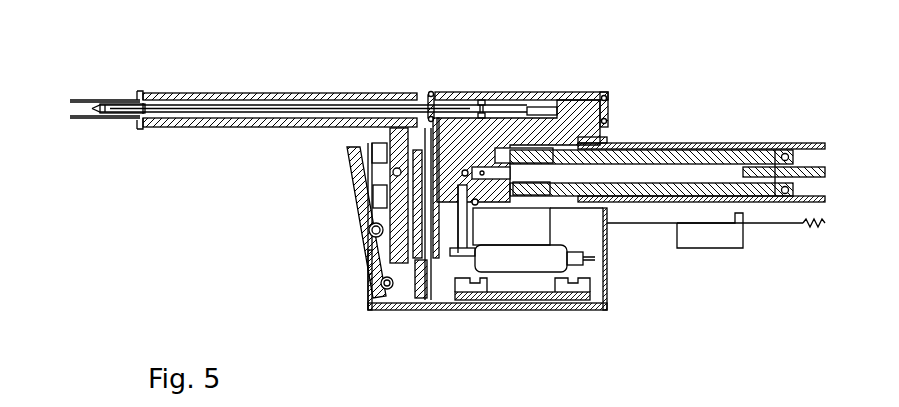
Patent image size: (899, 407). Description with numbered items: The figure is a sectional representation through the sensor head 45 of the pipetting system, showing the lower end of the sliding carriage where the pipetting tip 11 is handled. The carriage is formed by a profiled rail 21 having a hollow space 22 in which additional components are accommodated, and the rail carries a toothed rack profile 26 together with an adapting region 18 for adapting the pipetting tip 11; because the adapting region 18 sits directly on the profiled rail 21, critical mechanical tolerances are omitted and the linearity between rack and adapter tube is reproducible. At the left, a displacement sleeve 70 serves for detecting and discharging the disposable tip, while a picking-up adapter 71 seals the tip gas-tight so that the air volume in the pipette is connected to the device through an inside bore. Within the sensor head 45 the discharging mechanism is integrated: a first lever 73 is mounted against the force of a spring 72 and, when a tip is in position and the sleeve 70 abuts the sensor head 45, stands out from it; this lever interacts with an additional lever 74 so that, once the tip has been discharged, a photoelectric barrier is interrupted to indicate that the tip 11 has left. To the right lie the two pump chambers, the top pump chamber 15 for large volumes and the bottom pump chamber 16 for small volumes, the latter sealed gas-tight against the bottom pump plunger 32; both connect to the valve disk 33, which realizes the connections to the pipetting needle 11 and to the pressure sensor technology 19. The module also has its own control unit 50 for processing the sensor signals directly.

The pipetting tip 11 is at (97, 100).
The picking-up adapter 71 is at (113, 102).
The displacement sleeve 70 is at (308, 92).
The pressure sensor technology 19 is at (453, 130).
The adapting region 18 is at (515, 92).
The top pump chamber 15 is at (808, 148).
The bottom pump plunger 32 is at (718, 150).
The bottom pump chamber 16 is at (752, 143).
The first lever 73 is at (346, 167).
The additional lever 74 is at (368, 250).
The spring 72 is at (370, 280).
The control unit 50 is at (538, 303).
The sensor head 45 is at (450, 312).
The valve disk 33 is at (483, 190).
The profiled rail 21 is at (767, 216).
The hollow space 22 is at (650, 202).
The toothed rack profile 26 is at (818, 228).